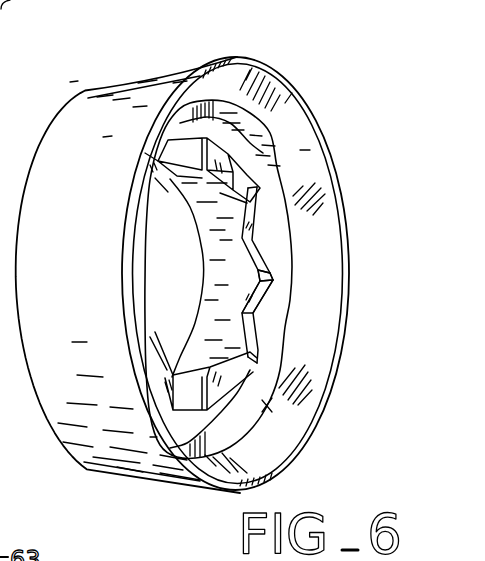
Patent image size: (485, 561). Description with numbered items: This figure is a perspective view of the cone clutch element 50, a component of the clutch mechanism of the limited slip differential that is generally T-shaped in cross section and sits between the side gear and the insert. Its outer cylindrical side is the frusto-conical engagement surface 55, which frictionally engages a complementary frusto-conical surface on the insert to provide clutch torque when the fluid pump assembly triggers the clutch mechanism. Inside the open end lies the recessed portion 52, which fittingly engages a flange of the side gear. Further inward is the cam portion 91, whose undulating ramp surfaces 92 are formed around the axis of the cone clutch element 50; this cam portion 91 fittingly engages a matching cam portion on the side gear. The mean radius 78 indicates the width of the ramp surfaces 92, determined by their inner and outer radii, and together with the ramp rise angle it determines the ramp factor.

The cone clutch element 50 is at (212, 256).
The frusto-conical engagement surface 55 is at (165, 72).
The recessed portion 52 is at (261, 397).
The mean radius 78 is at (276, 257).
The undulating ramp surfaces 92 is at (263, 283).
The cam portion 91 is at (262, 305).